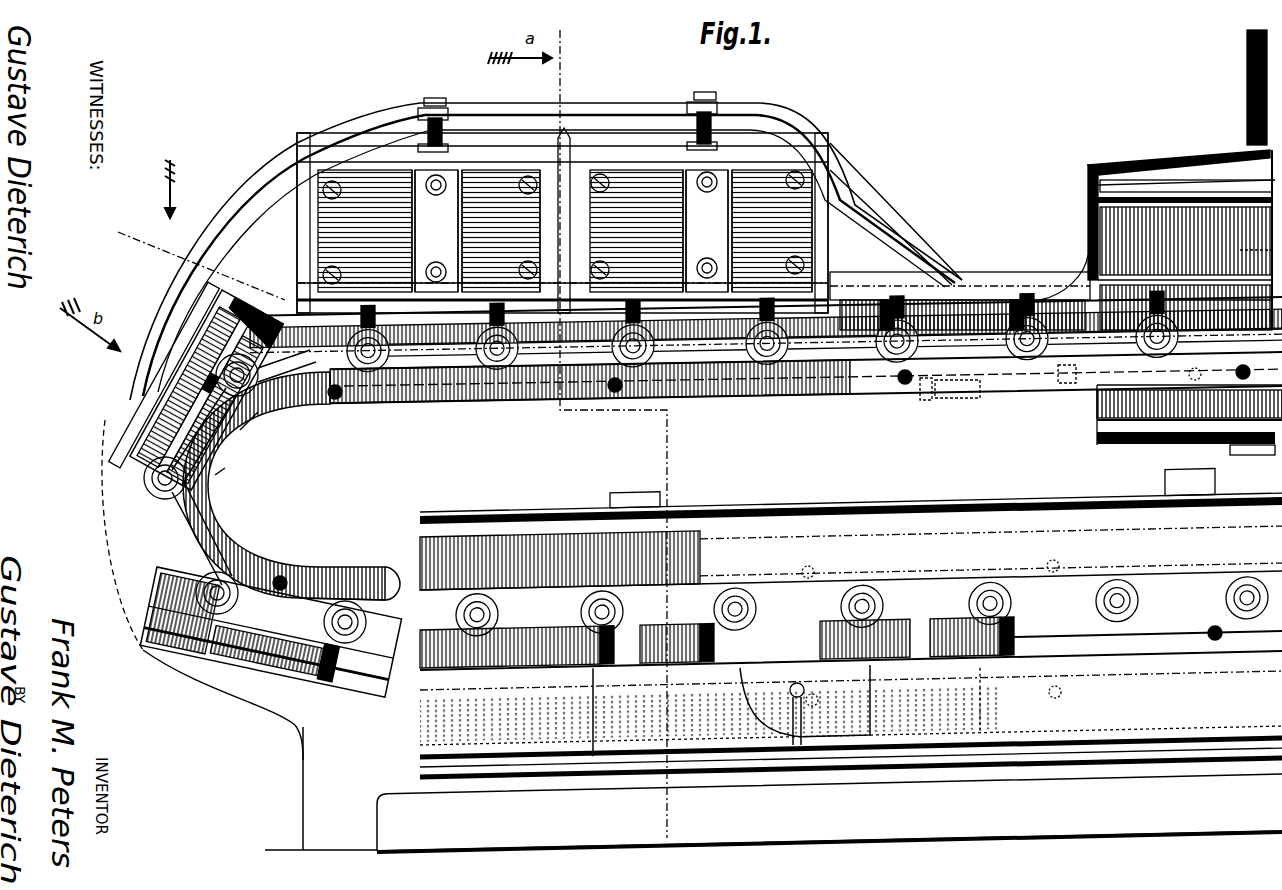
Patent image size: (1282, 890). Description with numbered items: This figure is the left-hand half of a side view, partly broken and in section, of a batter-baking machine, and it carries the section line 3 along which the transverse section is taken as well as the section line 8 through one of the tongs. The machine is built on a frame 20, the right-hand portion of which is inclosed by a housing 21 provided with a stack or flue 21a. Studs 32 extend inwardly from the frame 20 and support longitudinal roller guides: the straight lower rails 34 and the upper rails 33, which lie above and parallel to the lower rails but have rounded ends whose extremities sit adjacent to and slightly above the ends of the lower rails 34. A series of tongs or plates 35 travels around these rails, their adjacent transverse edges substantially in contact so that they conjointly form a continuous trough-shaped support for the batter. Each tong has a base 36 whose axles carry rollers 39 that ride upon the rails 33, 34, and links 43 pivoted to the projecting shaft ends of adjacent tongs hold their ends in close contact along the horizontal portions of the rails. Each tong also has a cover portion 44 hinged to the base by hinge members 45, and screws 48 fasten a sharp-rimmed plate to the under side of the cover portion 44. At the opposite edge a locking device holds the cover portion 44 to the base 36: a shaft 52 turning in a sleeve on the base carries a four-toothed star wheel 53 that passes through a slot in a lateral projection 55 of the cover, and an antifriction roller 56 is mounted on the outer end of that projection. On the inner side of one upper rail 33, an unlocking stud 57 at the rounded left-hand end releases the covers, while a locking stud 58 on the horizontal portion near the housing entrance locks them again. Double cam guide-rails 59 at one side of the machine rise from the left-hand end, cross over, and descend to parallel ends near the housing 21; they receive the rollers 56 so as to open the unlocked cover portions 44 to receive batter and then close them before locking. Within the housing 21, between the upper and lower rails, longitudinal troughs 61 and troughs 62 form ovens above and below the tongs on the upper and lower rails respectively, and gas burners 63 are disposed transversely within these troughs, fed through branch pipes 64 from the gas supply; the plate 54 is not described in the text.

The section line 3- 3 is at (619, 424).
The section line 8- 8 is at (195, 263).
The frame 20 is at (292, 800).
The housing 21 is at (1140, 168).
The stack or flue 21a is at (1247, 78).
The studs 32 is at (333, 400).
The upper rails 33 is at (530, 402).
The lower rails 34 is at (851, 594).
The tongs or plates 35 is at (588, 499).
The base 36 is at (410, 402).
The rollers 39 is at (364, 375).
The links 43 is at (795, 372).
The cover portion 44 is at (864, 272).
The hinge members 45 is at (345, 275).
The screws 48 is at (571, 231).
The shaft 52 is at (930, 401).
The star wheel 53 is at (225, 468).
The carrier plate 54 is at (102, 415).
The lateral projection 55 is at (446, 134).
The antifriction roller 56 is at (436, 104).
The unlocking stud 57 is at (258, 416).
The locking stud 58 is at (1062, 384).
The double cam guide-rails 59 is at (248, 200).
The troughs 61 is at (1256, 236).
The troughs 62 is at (975, 585).
The gas burners 63 is at (1053, 560).
The branch pipes 64 is at (1175, 182).